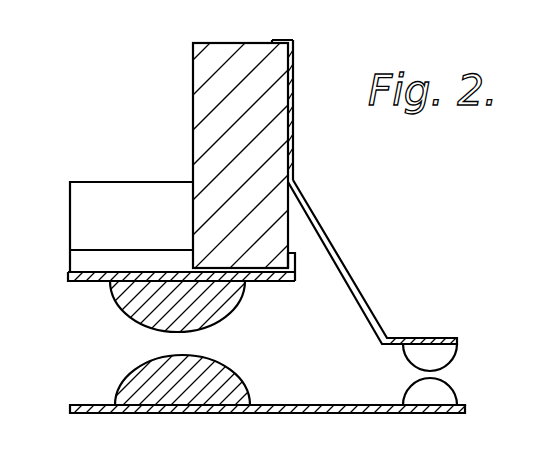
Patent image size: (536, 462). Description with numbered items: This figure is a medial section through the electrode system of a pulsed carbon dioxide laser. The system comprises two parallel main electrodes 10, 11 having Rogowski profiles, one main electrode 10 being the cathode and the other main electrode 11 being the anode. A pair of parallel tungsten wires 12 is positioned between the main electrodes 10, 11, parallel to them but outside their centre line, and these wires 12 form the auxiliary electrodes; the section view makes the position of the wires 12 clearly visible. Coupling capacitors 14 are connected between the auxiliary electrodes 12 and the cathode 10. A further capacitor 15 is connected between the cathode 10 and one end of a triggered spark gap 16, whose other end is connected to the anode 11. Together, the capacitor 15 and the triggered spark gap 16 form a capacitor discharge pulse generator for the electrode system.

The main electrode 10 is at (135, 303).
The main electrode 11 is at (140, 373).
The tungsten wires 12 is at (97, 343).
The coupling capacitors 14 is at (97, 196).
The capacitor 15 is at (200, 77).
The triggered spark gap 16 is at (425, 375).